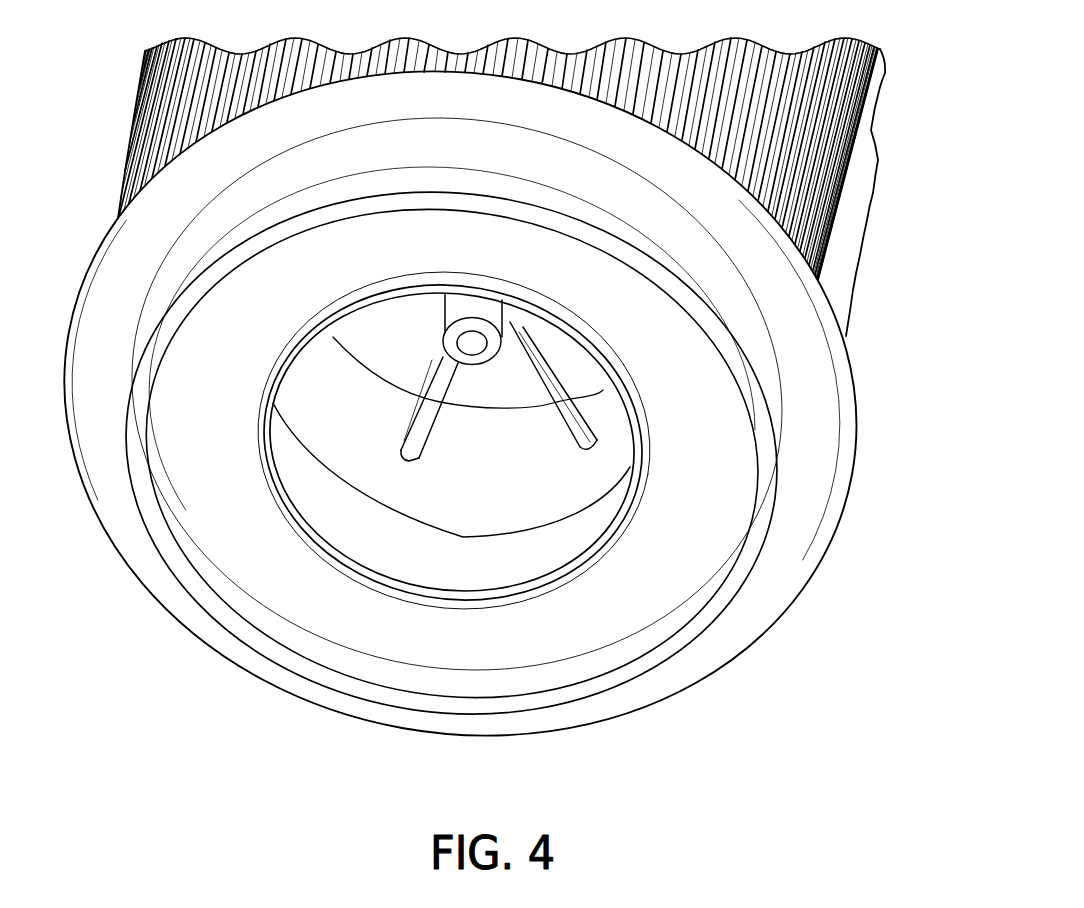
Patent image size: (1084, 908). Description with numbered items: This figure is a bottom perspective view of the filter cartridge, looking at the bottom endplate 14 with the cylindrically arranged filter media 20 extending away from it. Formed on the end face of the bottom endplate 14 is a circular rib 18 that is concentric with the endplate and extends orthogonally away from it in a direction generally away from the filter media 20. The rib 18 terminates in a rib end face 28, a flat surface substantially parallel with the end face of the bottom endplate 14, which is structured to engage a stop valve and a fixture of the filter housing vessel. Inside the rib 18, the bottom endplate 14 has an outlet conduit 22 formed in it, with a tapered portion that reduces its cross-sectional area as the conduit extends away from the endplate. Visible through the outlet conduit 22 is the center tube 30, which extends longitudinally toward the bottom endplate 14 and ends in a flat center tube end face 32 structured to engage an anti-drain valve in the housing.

The bottom endplate 14 is at (770, 633).
The rib 18 is at (771, 542).
The filter media 20 is at (853, 248).
The outlet conduit 22 is at (541, 600).
The rib end face 28 is at (695, 632).
The center tube 30 is at (499, 313).
The center tube end face 32 is at (487, 363).